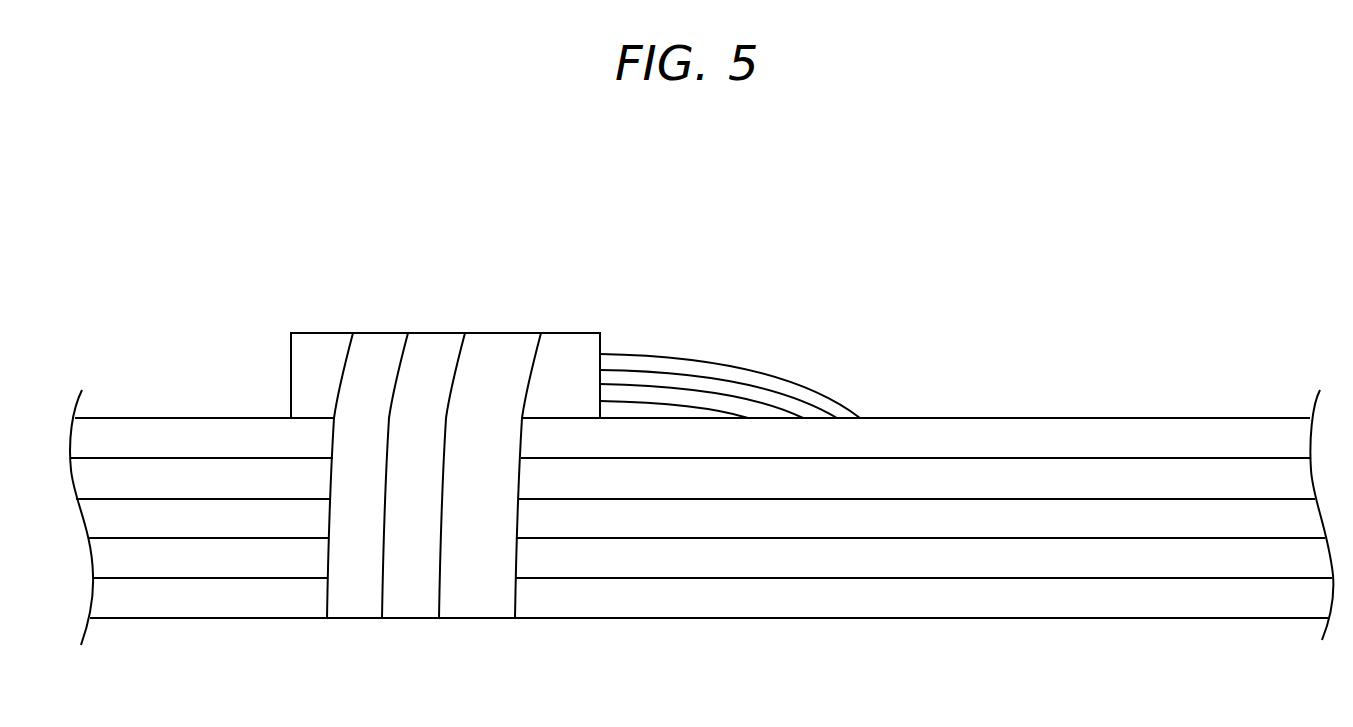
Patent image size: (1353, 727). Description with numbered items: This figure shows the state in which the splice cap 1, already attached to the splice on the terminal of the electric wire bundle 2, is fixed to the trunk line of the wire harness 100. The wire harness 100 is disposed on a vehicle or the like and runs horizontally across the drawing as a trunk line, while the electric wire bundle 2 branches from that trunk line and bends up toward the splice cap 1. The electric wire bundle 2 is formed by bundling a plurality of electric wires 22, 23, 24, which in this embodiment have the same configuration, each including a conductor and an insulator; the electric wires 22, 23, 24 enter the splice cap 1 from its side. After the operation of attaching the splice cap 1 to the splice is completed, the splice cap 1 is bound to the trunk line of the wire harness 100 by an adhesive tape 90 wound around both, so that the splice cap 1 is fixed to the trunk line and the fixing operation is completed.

The splice cap 1 is at (332, 328).
The electric wire bundle 2 is at (790, 372).
The electric wire 22 is at (650, 354).
The electric wire 23 is at (668, 380).
The electric wire 24 is at (700, 400).
The adhesive tape 90 is at (426, 358).
The wire harness 100 is at (1017, 415).